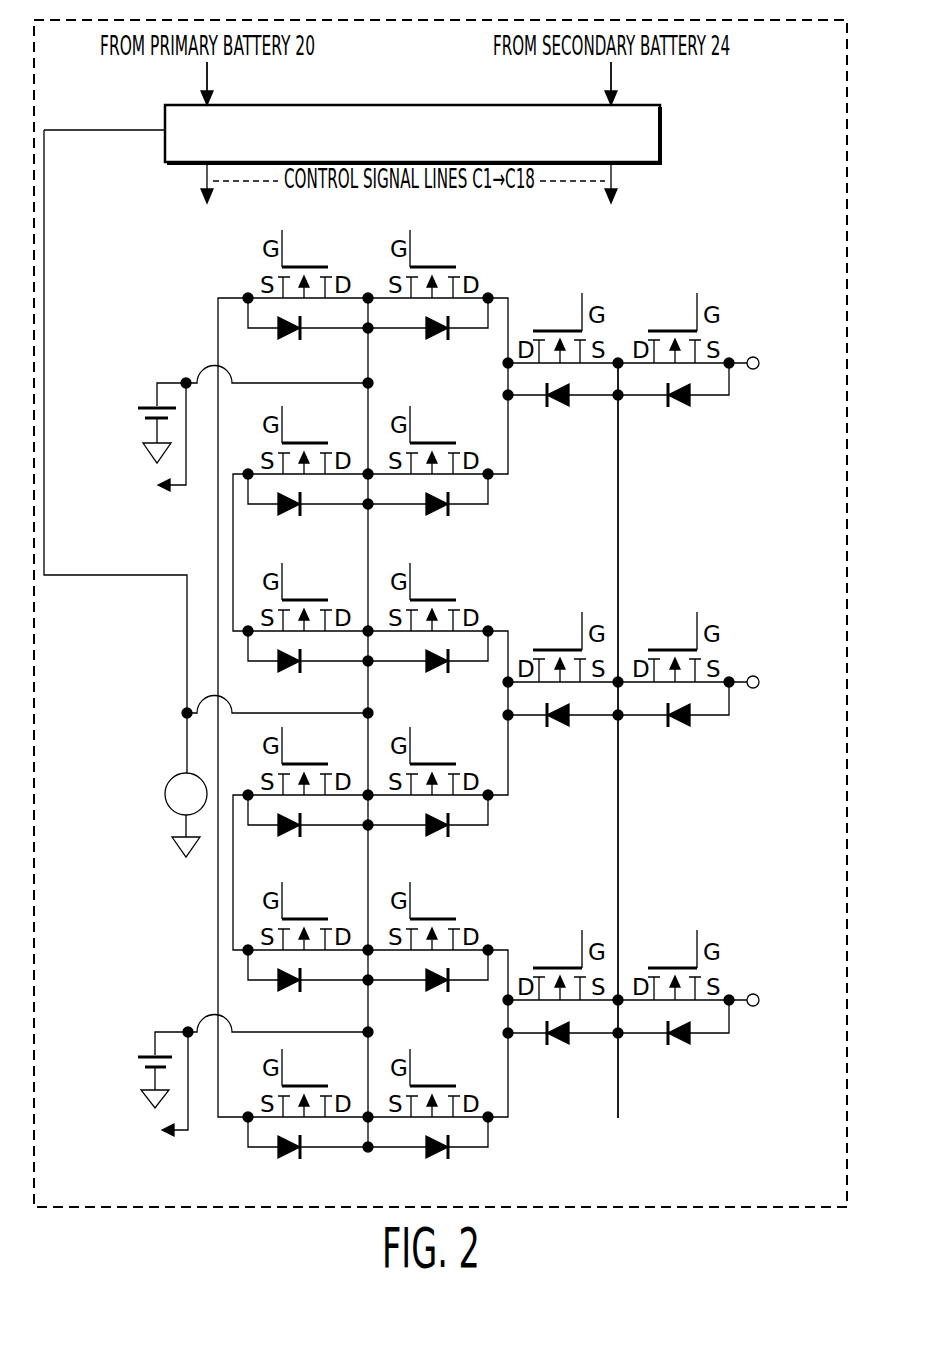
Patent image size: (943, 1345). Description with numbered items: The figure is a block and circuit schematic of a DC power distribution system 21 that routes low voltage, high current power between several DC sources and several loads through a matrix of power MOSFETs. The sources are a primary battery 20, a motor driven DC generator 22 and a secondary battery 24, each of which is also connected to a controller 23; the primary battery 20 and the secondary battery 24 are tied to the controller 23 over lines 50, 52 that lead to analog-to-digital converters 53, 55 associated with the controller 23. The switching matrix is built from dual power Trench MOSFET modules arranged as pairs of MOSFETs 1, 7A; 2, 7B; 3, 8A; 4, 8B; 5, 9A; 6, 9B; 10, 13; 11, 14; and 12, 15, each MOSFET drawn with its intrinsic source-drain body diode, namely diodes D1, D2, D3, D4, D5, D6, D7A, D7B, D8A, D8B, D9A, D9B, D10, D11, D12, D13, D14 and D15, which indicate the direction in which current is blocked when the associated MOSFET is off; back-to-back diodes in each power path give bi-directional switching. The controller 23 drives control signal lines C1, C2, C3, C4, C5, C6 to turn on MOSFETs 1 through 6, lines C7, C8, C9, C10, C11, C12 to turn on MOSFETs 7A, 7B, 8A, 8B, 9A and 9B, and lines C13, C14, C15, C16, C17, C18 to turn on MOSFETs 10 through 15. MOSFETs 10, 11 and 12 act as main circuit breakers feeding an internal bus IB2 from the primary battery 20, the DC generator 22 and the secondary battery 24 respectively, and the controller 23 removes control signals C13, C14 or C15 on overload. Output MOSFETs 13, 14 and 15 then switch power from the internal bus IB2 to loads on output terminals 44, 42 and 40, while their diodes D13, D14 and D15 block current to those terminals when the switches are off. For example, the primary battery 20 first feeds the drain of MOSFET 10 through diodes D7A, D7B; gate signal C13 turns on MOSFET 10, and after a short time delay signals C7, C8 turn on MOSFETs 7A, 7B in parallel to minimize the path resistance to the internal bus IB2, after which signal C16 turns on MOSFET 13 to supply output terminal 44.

The power MOSFET 1 is at (306, 1083).
The power MOSFET 2 is at (306, 916).
The power MOSFET 3 is at (306, 761).
The power MOSFET 4 is at (306, 597).
The power MOSFET 5 is at (306, 440).
The power MOSFET 6 is at (306, 264).
The power MOSFET 7A is at (434, 1083).
The power MOSFET 7B is at (434, 916).
The power MOSFET 8A is at (434, 761).
The power MOSFET 8B is at (434, 597).
The power MOSFET 9A is at (434, 440).
The power MOSFET 9B is at (434, 264).
The MOSFET switch 10 is at (561, 965).
The MOSFET switch 11 is at (561, 647).
The MOSFET switch 12 is at (561, 328).
The output MOSFET switch 13 is at (676, 965).
The output MOSFET switch 14 is at (676, 647).
The output MOSFET switch 15 is at (676, 328).
The primary battery 20 is at (143, 1068).
The DC power distribution system 21 is at (734, 205).
The motor driven DC generator 22 is at (166, 803).
The controller 23 is at (395, 104).
The secondary battery 24 is at (145, 420).
The output terminal 40 is at (753, 356).
The output terminal 42 is at (753, 675).
The output terminal 44 is at (753, 993).
The primary battery sense line 50 is at (208, 74).
The secondary battery sense line 52 is at (610, 76).
The A/D converter 53 is at (120, 1115).
The A/D converter 55 is at (119, 468).
The control signal line C1 is at (282, 1056).
The control signal line C2 is at (282, 887).
The control signal line C3 is at (282, 734).
The control signal line C4 is at (282, 568).
The control signal line C5 is at (282, 412).
The control signal line C6 is at (282, 236).
The control signal line C7 is at (410, 1057).
The control signal line C8 is at (410, 887).
The control signal line C9 is at (410, 735).
The control signal line C10 is at (410, 568).
The control signal line C11 is at (410, 413).
The control signal line C12 is at (410, 238).
The control signal line C13 is at (582, 938).
The control signal line C14 is at (582, 620).
The control signal line C15 is at (582, 300).
The control signal line C16 is at (697, 933).
The control signal line C17 is at (697, 620).
The control signal line C18 is at (697, 300).
The source-drain body diode D1 is at (290, 1162).
The source-drain body diode D2 is at (290, 995).
The source-drain body diode D3 is at (290, 840).
The source-drain body diode D4 is at (290, 676).
The source-drain body diode D5 is at (290, 519).
The source-drain body diode D6 is at (290, 343).
The source-drain body diode D7A is at (439, 1162).
The source-drain body diode D7B is at (439, 995).
The source-drain body diode D8A is at (439, 840).
The source-drain body diode D8B is at (439, 676).
The source-drain body diode D9A is at (439, 519).
The source-drain body diode D9B is at (439, 343).
The source-drain body diode D10 is at (560, 1049).
The source-drain body diode D11 is at (560, 731).
The source-drain body diode D12 is at (560, 411).
The source-drain body diode D13 is at (680, 1049).
The source-drain body diode D14 is at (680, 731).
The source-drain body diode D15 is at (680, 411).
The internal bus IB2 is at (618, 1098).